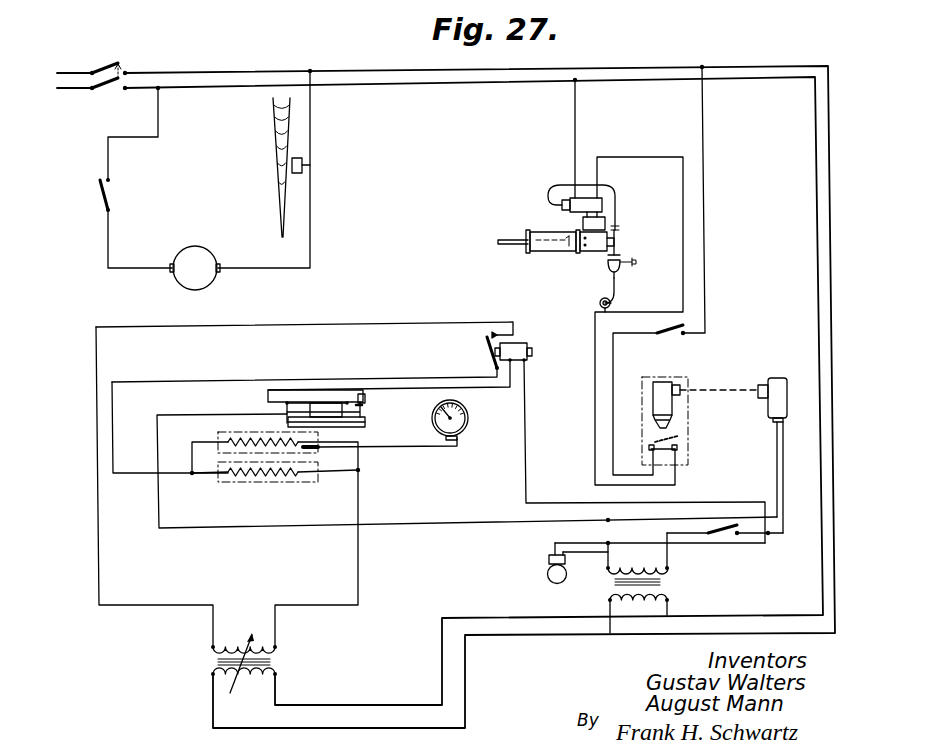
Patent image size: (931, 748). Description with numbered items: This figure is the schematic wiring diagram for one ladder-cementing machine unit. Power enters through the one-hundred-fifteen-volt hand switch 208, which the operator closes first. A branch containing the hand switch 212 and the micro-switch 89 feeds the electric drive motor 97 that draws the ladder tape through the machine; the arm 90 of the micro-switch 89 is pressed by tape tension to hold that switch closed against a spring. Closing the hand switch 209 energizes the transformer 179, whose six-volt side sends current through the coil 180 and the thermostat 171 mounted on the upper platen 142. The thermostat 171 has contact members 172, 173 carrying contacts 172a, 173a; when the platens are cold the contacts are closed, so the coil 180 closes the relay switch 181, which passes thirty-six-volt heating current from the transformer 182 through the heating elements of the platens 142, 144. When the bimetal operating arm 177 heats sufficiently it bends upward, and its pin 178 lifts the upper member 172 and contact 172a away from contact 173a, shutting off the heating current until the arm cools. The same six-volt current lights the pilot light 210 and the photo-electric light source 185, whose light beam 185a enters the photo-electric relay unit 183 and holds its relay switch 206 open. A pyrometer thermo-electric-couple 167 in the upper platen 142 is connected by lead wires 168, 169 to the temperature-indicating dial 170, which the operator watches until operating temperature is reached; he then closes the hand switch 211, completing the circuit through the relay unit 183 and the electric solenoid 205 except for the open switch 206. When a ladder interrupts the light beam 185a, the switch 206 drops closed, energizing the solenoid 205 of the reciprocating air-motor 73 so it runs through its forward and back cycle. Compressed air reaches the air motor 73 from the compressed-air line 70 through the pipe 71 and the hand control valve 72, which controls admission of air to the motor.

The hand switch 208 is at (114, 64).
The hand switch 212 is at (99, 195).
The electric motor 97 is at (209, 282).
The arm 90 is at (295, 142).
The micro-switch 89 is at (305, 165).
The electric solenoid 205 is at (600, 207).
The reciprocating air-motor 73 is at (556, 256).
The hand control valve 72 is at (624, 266).
The pipe 71 is at (618, 290).
The compressed-air line 70 is at (600, 303).
The hand switch 211 is at (670, 340).
The photo-electric relay unit 183 is at (687, 396).
The relay switch 206 is at (684, 447).
The light beam 185a is at (742, 383).
The photo-electric light source 185 is at (774, 381).
The coil 180 is at (514, 343).
The relay switch 181 is at (486, 345).
The contact member 173 is at (317, 396).
The contact member 172 is at (320, 401).
The electric contact 172a is at (344, 403).
The electric contact 173a is at (356, 392).
The pin 178 is at (366, 397).
The thermostat 171 is at (366, 406).
The bimetal operating arm 177 is at (328, 421).
The upper platen 142 is at (218, 440).
The lower platen 144 is at (218, 485).
The thermo-electric-couple 167 is at (318, 450).
The lead wire 168 is at (416, 450).
The lead wire 169 is at (445, 446).
The temperature-indicating dial 170 is at (470, 421).
The pilot light 210 is at (547, 574).
The hand switch 209 is at (722, 537).
The transformer 179 is at (670, 588).
The transformer 182 is at (288, 665).